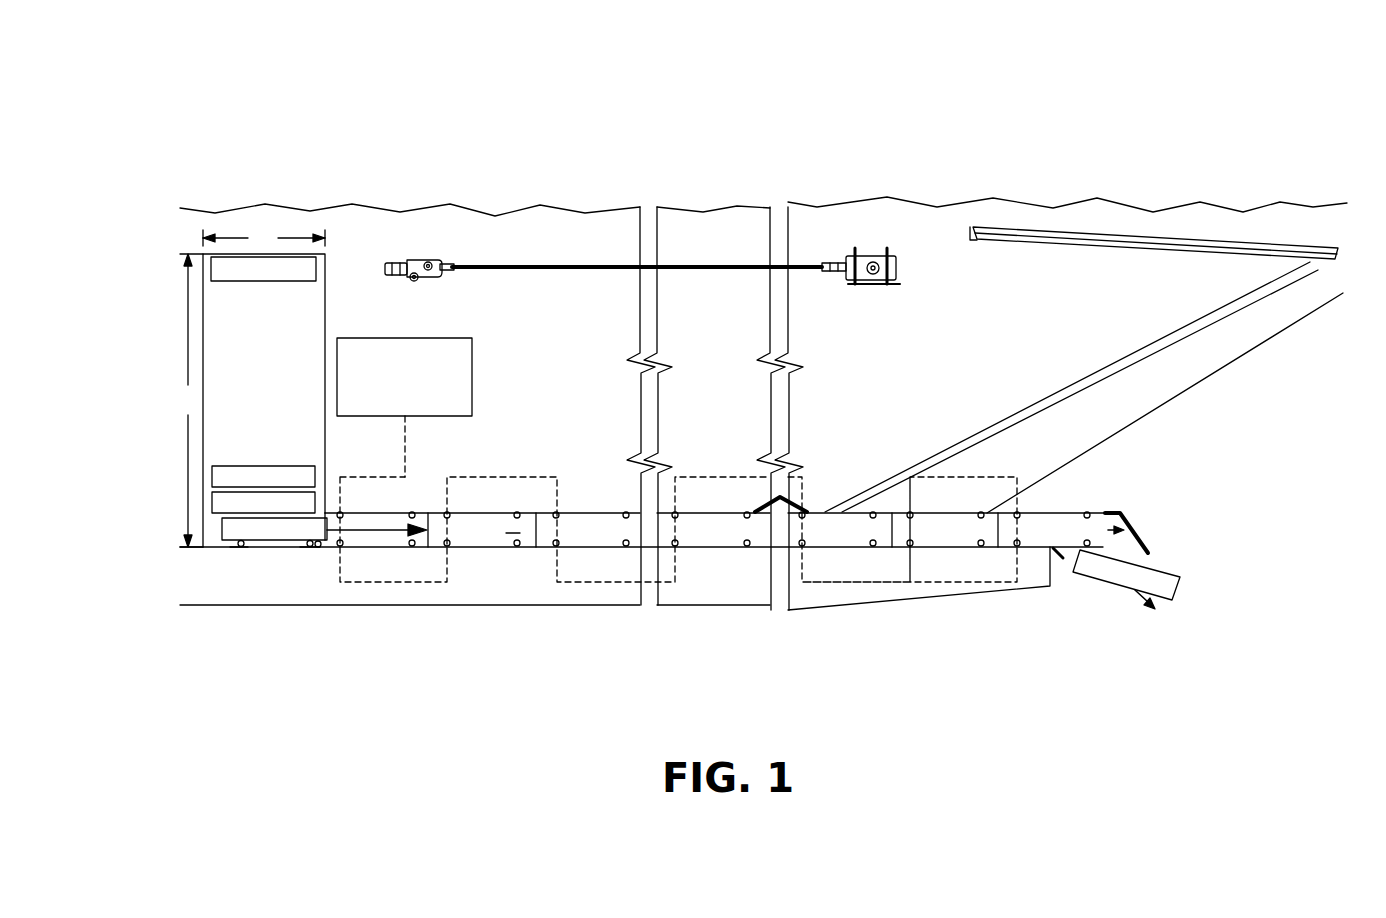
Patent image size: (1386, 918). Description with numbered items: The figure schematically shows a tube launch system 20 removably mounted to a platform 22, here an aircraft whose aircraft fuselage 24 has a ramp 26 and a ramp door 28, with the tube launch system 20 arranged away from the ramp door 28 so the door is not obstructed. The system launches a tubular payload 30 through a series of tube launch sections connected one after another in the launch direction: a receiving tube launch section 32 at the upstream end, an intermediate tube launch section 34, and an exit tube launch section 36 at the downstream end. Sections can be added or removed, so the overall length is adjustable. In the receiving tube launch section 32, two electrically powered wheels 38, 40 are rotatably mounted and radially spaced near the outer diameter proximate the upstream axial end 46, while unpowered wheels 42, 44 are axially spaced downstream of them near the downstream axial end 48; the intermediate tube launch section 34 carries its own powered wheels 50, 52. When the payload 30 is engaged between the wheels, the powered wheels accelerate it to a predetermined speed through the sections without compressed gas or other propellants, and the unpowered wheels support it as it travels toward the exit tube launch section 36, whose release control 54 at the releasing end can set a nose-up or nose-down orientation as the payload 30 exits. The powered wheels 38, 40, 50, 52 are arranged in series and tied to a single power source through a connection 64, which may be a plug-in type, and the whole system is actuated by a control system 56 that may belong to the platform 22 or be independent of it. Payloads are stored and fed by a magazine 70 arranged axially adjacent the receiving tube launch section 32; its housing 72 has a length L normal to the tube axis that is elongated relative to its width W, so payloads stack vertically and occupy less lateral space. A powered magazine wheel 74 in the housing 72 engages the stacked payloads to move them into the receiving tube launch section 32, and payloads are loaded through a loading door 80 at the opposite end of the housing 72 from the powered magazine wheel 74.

The tube launch system 20 is at (170, 422).
The platform 22 is at (208, 166).
The aircraft fuselage 24 is at (590, 250).
The ramp 26 is at (1020, 415).
The ramp door 28 is at (1170, 240).
The tubular payload 30 is at (1113, 573).
The receiving tube launch section 32 is at (361, 538).
The intermediate tube launch section 34 is at (540, 538).
The exit tube launch section 36 is at (1033, 537).
The powered wheel 38 is at (339, 547).
The powered wheel 40 is at (332, 546).
The unpowered wheel 42 is at (412, 546).
The unpowered wheel 44 is at (433, 547).
The upstream axial end 46 is at (317, 547).
The downstream axial end 48 is at (448, 546).
The powered wheel 50 is at (448, 519).
The powered wheel 52 is at (512, 533).
The release control 54 is at (1142, 530).
The control system 56 is at (337, 378).
The connection 64 is at (342, 477).
The magazine 70 is at (228, 303).
The housing 72 is at (212, 478).
The powered magazine wheel 74 is at (232, 545).
The loading door 80 is at (235, 265).